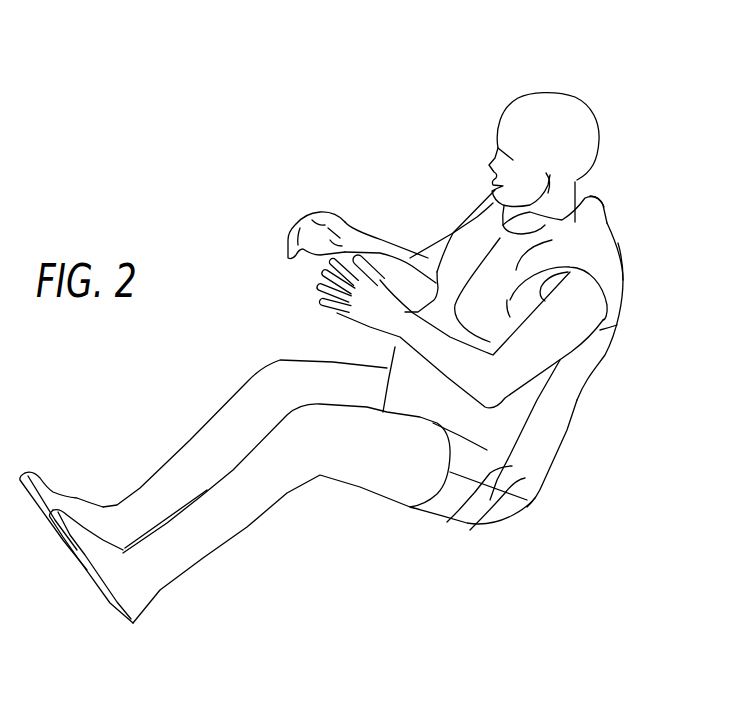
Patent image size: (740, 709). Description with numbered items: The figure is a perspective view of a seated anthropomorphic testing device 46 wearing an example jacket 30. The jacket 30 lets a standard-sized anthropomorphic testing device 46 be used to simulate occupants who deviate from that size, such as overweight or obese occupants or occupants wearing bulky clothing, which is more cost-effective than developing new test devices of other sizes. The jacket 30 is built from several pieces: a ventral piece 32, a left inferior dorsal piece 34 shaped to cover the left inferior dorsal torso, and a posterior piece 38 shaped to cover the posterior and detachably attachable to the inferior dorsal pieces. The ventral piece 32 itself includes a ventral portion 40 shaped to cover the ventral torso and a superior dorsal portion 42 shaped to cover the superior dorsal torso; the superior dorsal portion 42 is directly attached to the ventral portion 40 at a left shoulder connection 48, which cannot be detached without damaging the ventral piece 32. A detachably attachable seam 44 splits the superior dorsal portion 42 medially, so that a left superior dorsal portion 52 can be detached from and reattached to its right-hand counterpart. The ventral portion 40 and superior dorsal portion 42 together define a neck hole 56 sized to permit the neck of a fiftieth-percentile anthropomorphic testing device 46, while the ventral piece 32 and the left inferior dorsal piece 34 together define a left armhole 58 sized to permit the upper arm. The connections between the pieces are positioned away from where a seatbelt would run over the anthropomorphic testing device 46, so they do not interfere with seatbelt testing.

The jacket 30 is at (623, 255).
The ventral piece 32 is at (437, 278).
The left inferior dorsal piece 34 is at (578, 423).
The posterior piece 38 is at (505, 523).
The ventral portion 40 is at (424, 266).
The superior dorsal portion 42 is at (608, 224).
The detachably attachable seam 44 is at (490, 526).
The anthropomorphic testing device 46 is at (582, 87).
The left shoulder connection 48 is at (560, 250).
The left superior dorsal portion 52 is at (625, 280).
The neck hole 56 is at (476, 214).
The left armhole 58 is at (606, 325).